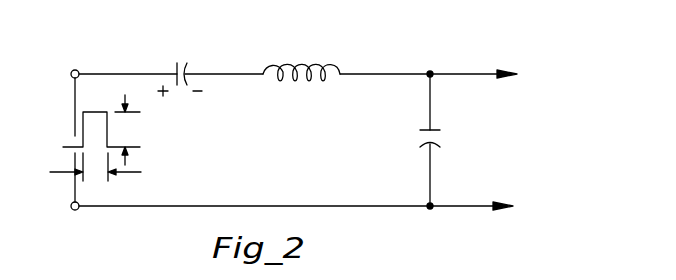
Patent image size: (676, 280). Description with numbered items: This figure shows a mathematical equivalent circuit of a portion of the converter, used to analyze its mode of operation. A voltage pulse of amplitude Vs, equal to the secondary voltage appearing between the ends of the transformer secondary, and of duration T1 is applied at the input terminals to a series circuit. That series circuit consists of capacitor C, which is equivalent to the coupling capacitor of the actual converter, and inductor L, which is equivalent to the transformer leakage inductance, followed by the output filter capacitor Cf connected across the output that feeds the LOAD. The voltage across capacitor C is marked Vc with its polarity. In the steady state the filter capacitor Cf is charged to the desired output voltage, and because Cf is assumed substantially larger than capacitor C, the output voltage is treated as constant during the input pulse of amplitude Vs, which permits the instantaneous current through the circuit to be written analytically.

The capacitor C is at (182, 62).
The inductor L is at (302, 64).
The output filter capacitor Cf is at (437, 143).
The capacitor voltage Vc is at (180, 102).
The voltage pulse amplitude Vs is at (127, 130).
The pulse duration T1 is at (95, 169).
The load LOAD is at (536, 76).